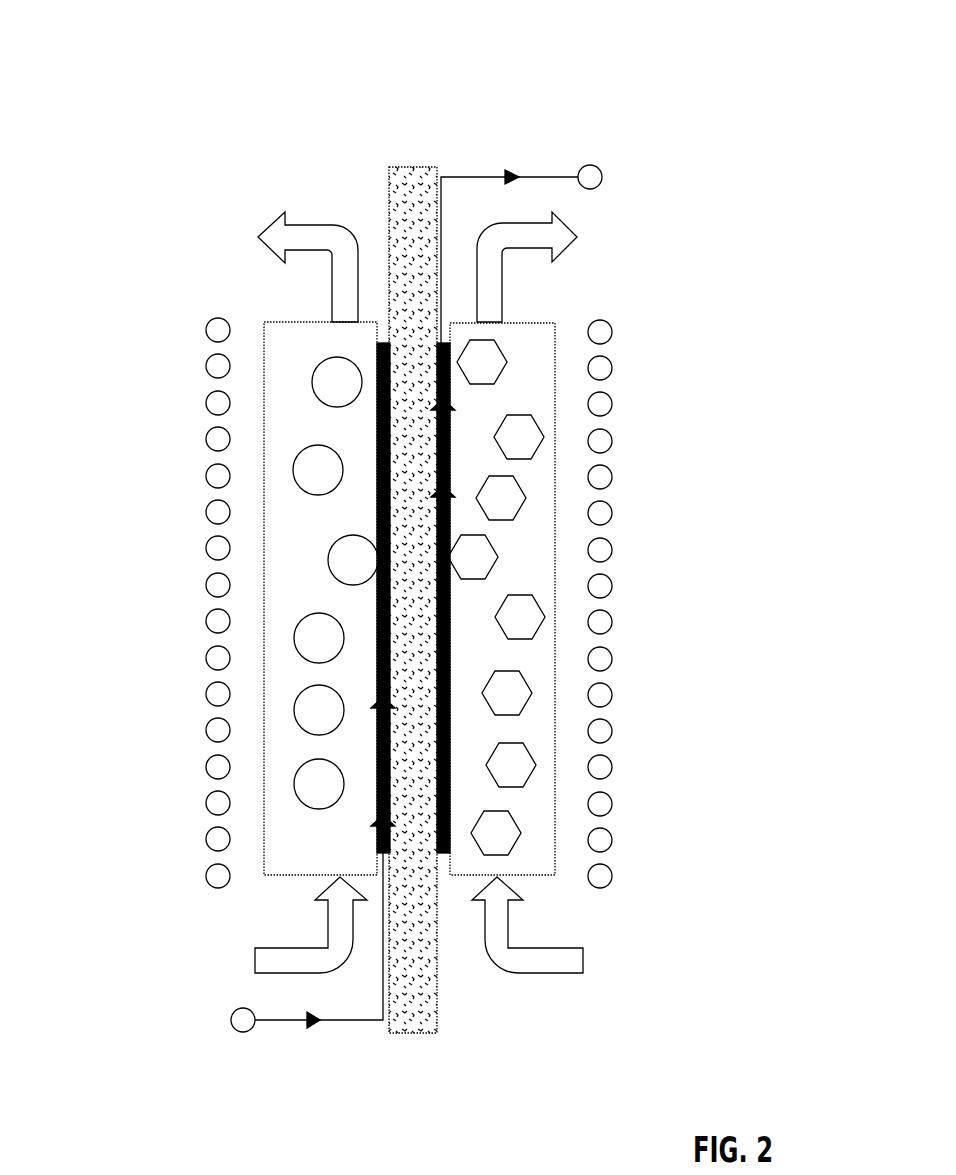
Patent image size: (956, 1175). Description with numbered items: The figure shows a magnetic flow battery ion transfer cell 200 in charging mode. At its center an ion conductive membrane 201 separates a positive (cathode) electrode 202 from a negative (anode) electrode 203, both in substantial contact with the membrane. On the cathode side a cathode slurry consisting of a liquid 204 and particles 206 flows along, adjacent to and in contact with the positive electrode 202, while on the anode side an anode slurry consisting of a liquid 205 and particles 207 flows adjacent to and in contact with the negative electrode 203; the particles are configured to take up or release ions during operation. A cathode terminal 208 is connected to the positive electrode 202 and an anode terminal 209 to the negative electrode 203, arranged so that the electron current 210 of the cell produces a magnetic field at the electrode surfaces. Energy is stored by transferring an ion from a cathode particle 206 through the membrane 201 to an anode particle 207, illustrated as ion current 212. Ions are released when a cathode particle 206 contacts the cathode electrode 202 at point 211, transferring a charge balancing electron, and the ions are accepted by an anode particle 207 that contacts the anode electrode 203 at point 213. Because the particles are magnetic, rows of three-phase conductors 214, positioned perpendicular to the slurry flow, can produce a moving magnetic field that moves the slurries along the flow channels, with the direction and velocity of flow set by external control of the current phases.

The magnetic flow battery ion transfer cell 200 is at (643, 97).
The ion conductive membrane 201 is at (390, 187).
The positive electrode 202 is at (377, 355).
The negative electrode 203 is at (443, 358).
The liquid 204 is at (287, 400).
The liquid 205 is at (528, 393).
The particles 206 is at (318, 470).
The particles 207 is at (502, 498).
The cathode terminal 208 is at (231, 1020).
The anode terminal 209 is at (602, 173).
The electron current 210 is at (512, 178).
The contact point 211 is at (380, 565).
The ion current 212 is at (413, 573).
The contact point 213 is at (446, 560).
The three-phase conductors 214 is at (218, 765).